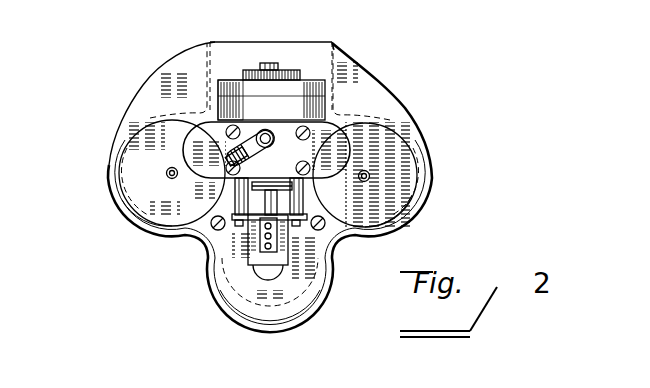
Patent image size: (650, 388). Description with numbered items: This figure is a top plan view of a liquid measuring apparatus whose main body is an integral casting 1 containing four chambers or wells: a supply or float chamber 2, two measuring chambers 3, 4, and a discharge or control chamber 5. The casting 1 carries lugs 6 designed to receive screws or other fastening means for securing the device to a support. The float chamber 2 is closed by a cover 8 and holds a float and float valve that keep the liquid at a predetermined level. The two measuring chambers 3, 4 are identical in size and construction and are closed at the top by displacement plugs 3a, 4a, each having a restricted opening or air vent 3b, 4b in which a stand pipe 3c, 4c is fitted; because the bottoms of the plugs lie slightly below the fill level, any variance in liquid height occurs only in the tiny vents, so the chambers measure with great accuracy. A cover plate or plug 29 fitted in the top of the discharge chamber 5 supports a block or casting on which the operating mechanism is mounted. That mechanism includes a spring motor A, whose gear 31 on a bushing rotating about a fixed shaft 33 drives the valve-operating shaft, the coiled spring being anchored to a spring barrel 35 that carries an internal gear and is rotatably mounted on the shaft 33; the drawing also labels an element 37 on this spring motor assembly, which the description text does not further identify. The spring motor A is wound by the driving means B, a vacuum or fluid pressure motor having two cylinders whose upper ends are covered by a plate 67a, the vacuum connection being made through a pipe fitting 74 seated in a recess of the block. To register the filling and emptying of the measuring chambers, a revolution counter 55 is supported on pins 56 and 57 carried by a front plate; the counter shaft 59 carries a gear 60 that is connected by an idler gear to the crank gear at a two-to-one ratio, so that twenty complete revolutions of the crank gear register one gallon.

The main body casting 1 is at (402, 113).
The supply or float chamber 2 is at (245, 323).
The measuring chamber 3 is at (122, 217).
The displacement plug 3a is at (150, 213).
The restricted opening or air vent 3b is at (167, 176).
The stand pipe 3c is at (168, 170).
The measuring chamber 4 is at (398, 232).
The displacement plug 4a is at (400, 198).
The restricted opening or air vent 4b is at (371, 177).
The stand pipe 4c is at (381, 172).
The discharge or control chamber 5 is at (315, 66).
The lugs 6 is at (316, 46).
The cover 8 is at (280, 300).
The cover plate or plug 29 is at (387, 31).
The gear 31 is at (227, 100).
The shaft 33 is at (265, 67).
The spring barrel 35 is at (222, 108).
The ribbed ring 37 is at (243, 78).
The revolution counter 55 is at (252, 258).
The pin 56 is at (240, 200).
The pin 57 is at (300, 205).
The counter shaft 59 is at (263, 203).
The gear 60 is at (292, 218).
The plate 67a is at (190, 148).
The pipe fitting 74 is at (225, 148).
The spring motor A is at (275, 105).
The driving means B is at (328, 138).